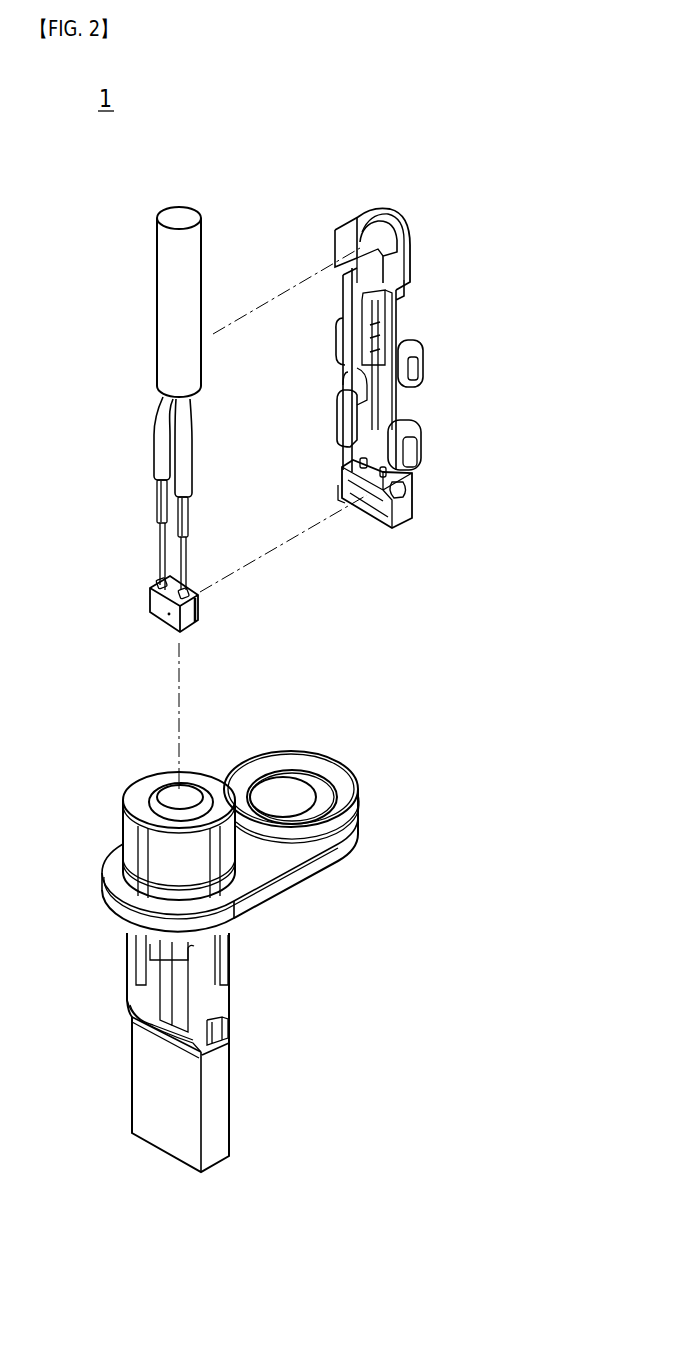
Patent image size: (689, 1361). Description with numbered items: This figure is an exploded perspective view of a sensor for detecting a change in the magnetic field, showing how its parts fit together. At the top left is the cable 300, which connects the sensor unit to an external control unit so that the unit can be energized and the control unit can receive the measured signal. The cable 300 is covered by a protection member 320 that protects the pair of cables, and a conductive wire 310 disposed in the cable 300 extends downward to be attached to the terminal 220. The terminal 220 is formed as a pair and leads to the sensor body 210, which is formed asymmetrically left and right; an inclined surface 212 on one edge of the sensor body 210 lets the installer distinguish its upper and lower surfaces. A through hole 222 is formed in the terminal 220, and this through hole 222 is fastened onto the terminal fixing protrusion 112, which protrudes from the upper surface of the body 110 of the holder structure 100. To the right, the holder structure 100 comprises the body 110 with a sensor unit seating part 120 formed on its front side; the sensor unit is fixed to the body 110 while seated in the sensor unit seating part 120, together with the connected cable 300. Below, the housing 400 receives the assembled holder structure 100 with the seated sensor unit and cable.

The holder structure for a sensor 100 is at (466, 351).
The body 110 is at (368, 446).
The terminal fixing protrusion 112 is at (392, 501).
The sensor unit seating part 120 is at (361, 520).
The sensor body 210 is at (150, 611).
The inclined surface 212 is at (188, 631).
The terminal 220 is at (158, 546).
The through hole 222 is at (152, 577).
The cable 300 is at (162, 447).
The conductive wire 310 is at (157, 500).
The protection member 320 is at (162, 288).
The housing 400 is at (218, 1085).